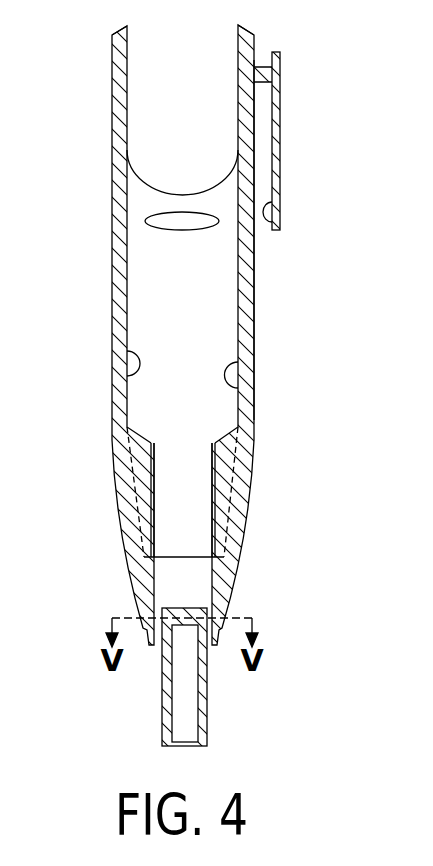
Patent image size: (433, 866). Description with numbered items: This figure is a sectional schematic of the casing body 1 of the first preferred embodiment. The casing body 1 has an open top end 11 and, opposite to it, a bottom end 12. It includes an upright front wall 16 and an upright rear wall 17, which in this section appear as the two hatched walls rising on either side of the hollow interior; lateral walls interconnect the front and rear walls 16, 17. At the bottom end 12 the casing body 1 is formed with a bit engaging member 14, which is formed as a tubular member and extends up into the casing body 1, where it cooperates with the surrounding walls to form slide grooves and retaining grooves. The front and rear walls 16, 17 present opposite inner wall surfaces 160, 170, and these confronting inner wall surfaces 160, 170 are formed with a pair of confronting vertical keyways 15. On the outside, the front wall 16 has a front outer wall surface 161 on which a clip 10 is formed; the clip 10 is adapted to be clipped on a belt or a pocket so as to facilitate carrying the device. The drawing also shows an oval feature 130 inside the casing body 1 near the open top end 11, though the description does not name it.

The casing body 1 is at (270, 291).
The clip 10 is at (281, 90).
The open top end 11 is at (254, 42).
The bottom end 12 is at (205, 650).
The bit engaging member 14 is at (198, 728).
The vertical keyways 15 is at (153, 462).
The front wall 16 is at (248, 351).
The rear wall 17 is at (112, 332).
The ink absorber 130 is at (183, 226).
The inner wall surface 160 is at (228, 387).
The front outer wall surface 161 is at (255, 328).
The inner wall surface 170 is at (122, 371).